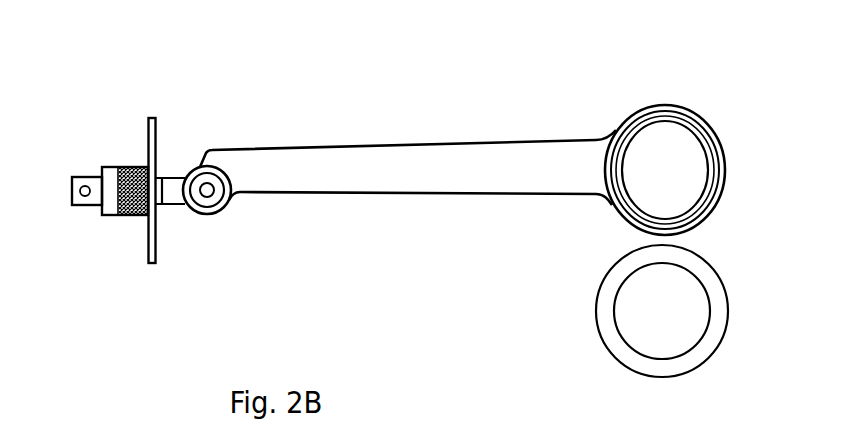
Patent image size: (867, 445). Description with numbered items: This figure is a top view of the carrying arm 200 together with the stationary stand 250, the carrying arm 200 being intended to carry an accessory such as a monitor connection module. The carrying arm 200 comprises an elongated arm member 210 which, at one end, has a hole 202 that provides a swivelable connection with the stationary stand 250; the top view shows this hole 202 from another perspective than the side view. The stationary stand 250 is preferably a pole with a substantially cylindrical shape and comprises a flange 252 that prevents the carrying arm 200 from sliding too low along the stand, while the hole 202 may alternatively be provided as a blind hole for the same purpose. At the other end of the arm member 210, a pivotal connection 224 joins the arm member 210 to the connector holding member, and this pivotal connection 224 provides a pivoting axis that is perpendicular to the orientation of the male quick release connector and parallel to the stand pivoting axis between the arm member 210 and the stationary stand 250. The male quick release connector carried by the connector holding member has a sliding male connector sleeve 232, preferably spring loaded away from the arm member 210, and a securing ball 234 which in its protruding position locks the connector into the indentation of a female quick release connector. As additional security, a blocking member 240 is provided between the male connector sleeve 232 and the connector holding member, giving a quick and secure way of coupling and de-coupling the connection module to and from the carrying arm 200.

The carrying arm 200 is at (400, 100).
The hole 202 is at (668, 127).
The arm member 210 is at (330, 147).
The pivotal connection 224 is at (207, 185).
The male connector sleeve 232 is at (115, 215).
The securing ball 234 is at (82, 187).
The blocking member 240 is at (147, 127).
The stationary stand 250 is at (614, 297).
The flange 252 is at (611, 350).